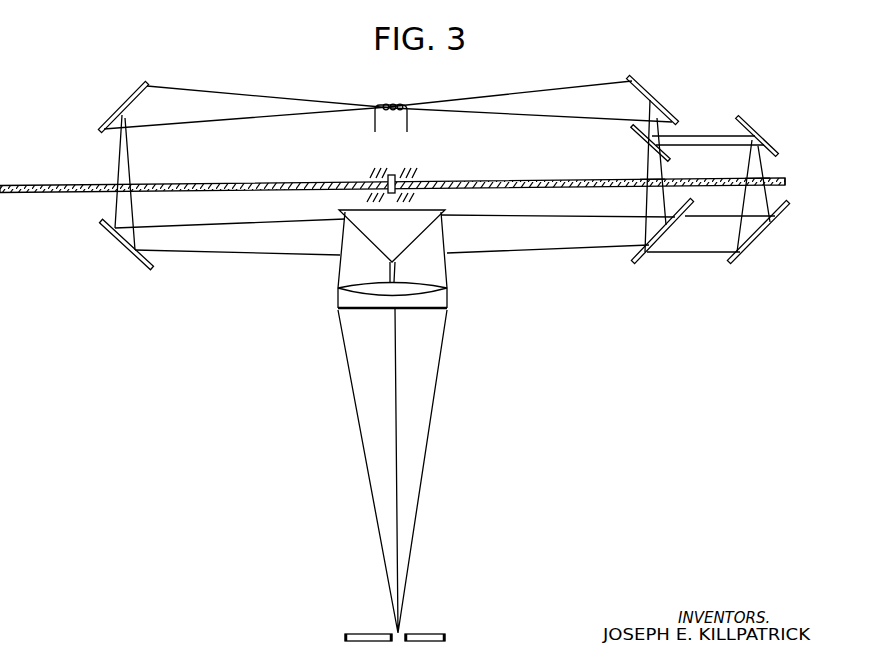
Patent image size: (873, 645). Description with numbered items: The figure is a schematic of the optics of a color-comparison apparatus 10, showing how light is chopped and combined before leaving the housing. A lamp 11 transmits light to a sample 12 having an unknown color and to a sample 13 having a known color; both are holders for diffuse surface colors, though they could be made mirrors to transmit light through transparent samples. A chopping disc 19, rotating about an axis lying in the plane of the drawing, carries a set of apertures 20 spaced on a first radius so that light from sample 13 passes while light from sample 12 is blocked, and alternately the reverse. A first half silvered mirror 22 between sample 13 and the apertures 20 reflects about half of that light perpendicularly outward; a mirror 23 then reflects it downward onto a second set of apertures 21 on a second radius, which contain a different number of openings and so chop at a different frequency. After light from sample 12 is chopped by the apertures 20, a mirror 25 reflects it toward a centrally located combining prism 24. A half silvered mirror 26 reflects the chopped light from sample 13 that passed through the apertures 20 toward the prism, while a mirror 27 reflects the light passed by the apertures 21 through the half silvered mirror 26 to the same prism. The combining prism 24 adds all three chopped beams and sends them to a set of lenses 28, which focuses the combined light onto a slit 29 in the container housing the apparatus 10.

The apparatus 10 is at (218, 331).
The lamp 11 is at (388, 103).
The sample 12 is at (123, 107).
The sample 13 is at (638, 80).
The chopping disc 19 is at (50, 193).
The set of apertures 20 is at (652, 178).
The second set of apertures 21 is at (757, 178).
The first half silvered mirror 22 is at (632, 132).
The mirror 23 is at (745, 118).
The combining prism 24 is at (425, 215).
The mirror 25 is at (130, 253).
The half silvered mirror 26 is at (648, 255).
The mirror 27 is at (753, 245).
The set of lenses 28 is at (425, 288).
The slit 29 is at (398, 637).